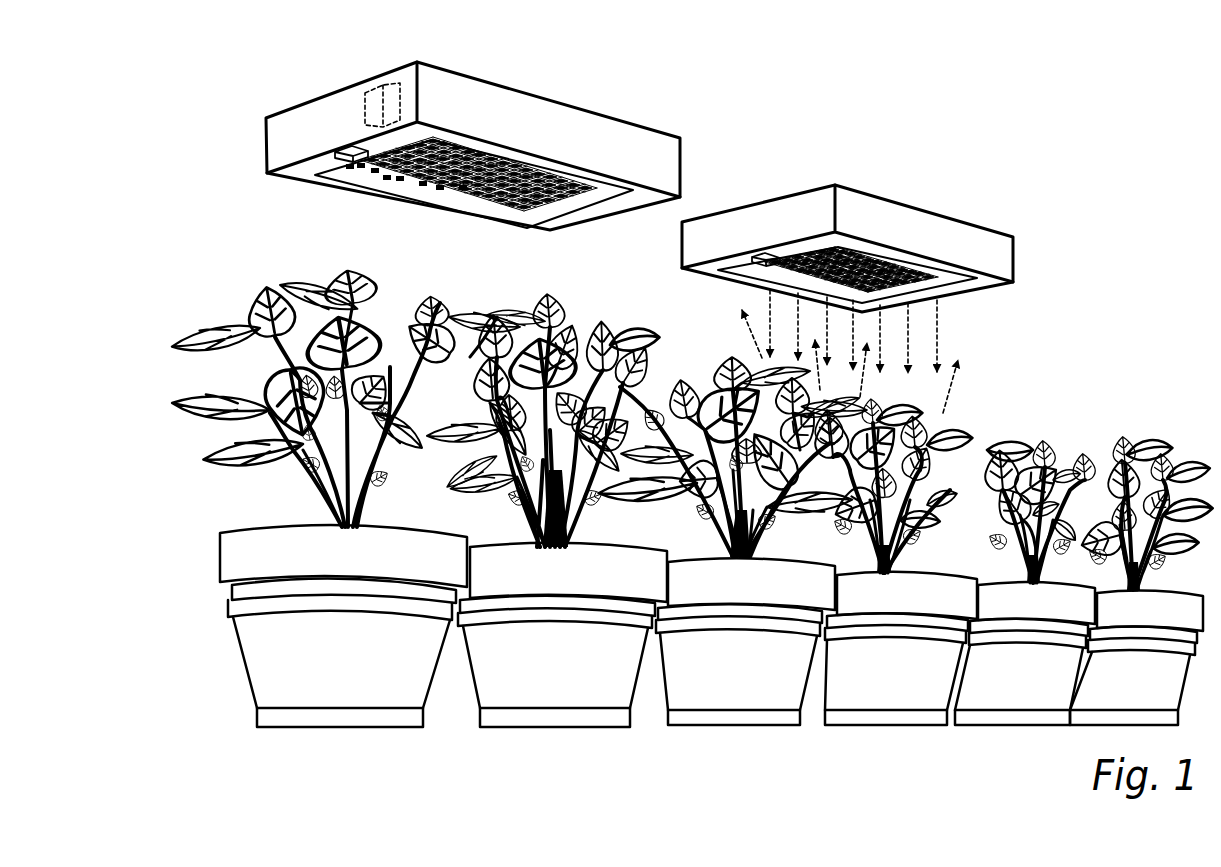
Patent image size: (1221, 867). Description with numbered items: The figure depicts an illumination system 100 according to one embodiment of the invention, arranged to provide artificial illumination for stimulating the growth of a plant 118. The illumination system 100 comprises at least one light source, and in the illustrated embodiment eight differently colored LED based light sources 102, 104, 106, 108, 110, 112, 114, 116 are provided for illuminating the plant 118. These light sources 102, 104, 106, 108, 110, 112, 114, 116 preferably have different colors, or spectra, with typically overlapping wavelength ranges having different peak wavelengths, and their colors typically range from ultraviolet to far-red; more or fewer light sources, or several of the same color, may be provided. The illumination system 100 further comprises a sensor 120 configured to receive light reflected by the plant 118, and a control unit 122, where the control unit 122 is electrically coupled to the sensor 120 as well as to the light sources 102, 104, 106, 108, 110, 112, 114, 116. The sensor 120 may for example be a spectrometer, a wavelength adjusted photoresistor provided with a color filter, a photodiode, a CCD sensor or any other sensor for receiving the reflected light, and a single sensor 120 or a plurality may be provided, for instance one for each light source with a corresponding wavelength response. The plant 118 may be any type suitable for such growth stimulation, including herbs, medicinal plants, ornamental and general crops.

The illumination system 100 is at (580, 107).
The LED based light source 102 is at (350, 167).
The LED based light source 104 is at (361, 165).
The LED based light source 106 is at (375, 170).
The LED based light source 108 is at (387, 177).
The LED based light source 110 is at (400, 178).
The LED based light source 112 is at (423, 183).
The LED based light source 114 is at (440, 187).
The LED based light source 116 is at (463, 187).
The plant 118 is at (203, 407).
The sensor 120 is at (347, 163).
The control unit 122 is at (398, 100).